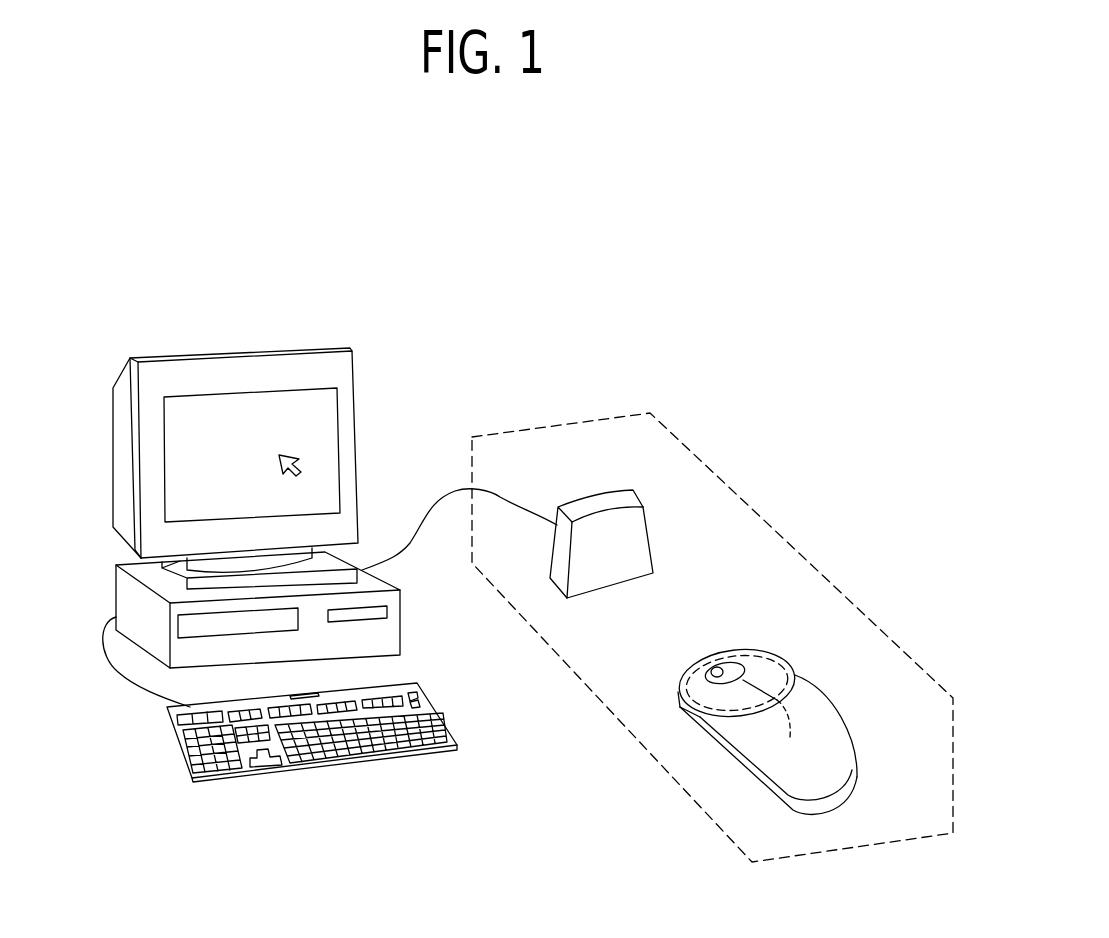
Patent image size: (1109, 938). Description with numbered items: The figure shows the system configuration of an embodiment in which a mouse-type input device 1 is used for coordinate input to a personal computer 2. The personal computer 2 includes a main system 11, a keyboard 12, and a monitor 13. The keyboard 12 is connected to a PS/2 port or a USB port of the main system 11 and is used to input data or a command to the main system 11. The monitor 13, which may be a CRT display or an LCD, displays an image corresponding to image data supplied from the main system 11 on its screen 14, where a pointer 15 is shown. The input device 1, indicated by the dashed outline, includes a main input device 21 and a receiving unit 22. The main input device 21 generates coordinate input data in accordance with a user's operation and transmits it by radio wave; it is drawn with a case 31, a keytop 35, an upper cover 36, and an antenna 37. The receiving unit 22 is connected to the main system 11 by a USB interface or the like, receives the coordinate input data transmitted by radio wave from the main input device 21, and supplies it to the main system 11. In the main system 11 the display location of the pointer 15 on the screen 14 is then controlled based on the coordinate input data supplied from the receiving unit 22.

The input device 1 is at (698, 460).
The personal computer 2 is at (103, 512).
The main system 11 is at (400, 628).
The keyboard 12 is at (183, 767).
The monitor 13 is at (357, 368).
The screen 14 is at (323, 430).
The pointer 15 is at (297, 473).
The main input device 21 is at (850, 708).
The receiving unit 22 is at (597, 478).
The case 31 is at (753, 777).
The keytop 35 is at (738, 654).
The upper cover 36 is at (845, 763).
The antenna 37 is at (788, 708).